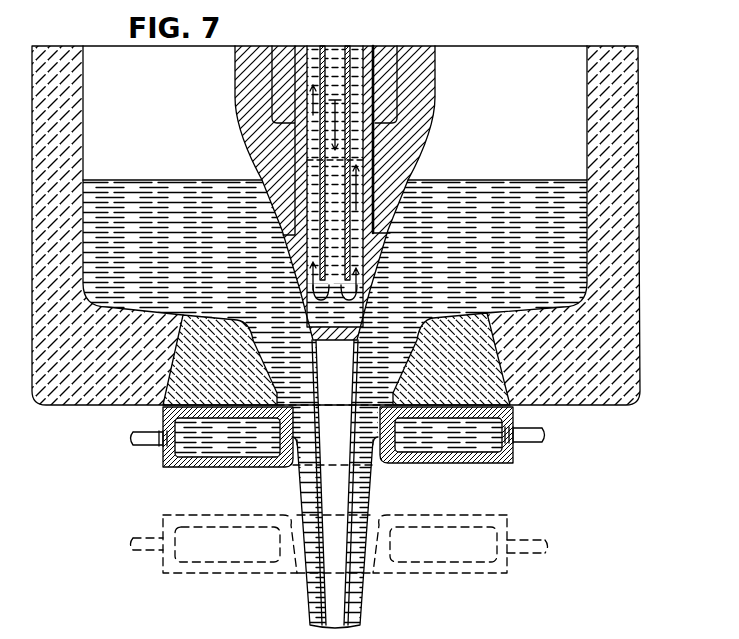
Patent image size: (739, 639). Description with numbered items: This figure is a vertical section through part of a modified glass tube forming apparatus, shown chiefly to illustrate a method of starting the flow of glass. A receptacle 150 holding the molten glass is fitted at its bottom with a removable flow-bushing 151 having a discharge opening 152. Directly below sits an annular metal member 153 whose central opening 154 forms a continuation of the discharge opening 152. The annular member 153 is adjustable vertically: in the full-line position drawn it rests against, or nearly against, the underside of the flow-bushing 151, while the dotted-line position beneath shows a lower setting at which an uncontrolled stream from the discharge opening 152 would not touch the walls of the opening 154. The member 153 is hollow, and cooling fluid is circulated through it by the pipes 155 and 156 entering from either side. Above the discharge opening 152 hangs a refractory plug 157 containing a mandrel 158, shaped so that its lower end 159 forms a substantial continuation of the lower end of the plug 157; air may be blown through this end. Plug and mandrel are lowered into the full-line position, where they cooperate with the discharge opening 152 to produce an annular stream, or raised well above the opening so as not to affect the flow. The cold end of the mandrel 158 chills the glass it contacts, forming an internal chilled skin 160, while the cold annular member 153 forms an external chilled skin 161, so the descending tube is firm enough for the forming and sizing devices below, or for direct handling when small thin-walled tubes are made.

The receptacle 150 is at (612, 103).
The flow-bushing 151 is at (460, 372).
The discharge opening 152 is at (252, 415).
The annular metal member 153 is at (477, 462).
The central opening 154 is at (290, 466).
The pipe 155 is at (512, 440).
The pipe 156 is at (148, 444).
The plug 157 is at (413, 97).
The mandrel 158 is at (362, 157).
The lower end of mandrel 159 is at (292, 268).
The internal chilled skin 160 is at (335, 370).
The external chilled skin 161 is at (370, 491).